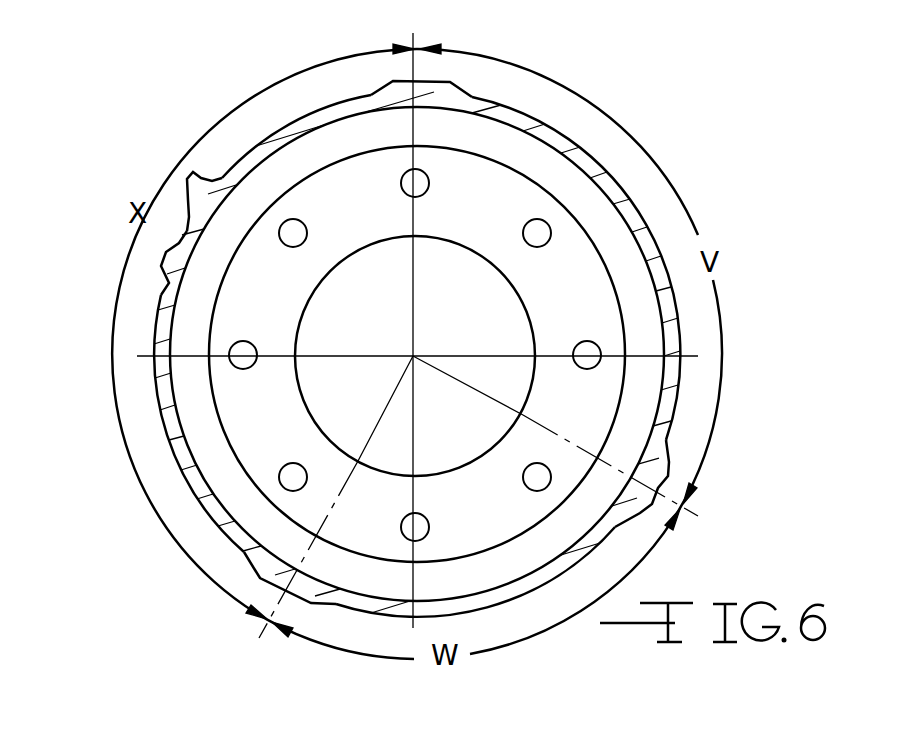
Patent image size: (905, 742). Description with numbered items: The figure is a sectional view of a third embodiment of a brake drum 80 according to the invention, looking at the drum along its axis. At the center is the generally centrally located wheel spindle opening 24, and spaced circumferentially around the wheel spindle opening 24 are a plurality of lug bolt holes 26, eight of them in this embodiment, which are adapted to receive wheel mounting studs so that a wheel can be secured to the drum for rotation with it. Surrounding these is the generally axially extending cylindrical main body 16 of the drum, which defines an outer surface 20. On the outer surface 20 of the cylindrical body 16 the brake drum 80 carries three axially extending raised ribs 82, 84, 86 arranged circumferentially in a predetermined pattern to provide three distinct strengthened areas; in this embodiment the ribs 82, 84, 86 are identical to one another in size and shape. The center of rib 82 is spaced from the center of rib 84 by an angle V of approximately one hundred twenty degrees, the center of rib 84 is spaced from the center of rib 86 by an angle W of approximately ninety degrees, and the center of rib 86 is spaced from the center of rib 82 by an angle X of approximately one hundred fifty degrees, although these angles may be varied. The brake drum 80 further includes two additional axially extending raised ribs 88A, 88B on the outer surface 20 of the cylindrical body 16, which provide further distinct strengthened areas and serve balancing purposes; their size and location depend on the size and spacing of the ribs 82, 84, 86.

The brake drum 80 is at (618, 93).
The raised rib 82 is at (437, 82).
The raised rib 84 is at (651, 510).
The raised rib 86 is at (258, 582).
The raised rib 88A is at (170, 247).
The raised rib 88B is at (186, 176).
The cylindrical main body 16 is at (632, 192).
The outer surface 20 is at (683, 321).
The wheel spindle opening 24 is at (306, 305).
The lug bolt holes 26 is at (408, 193).